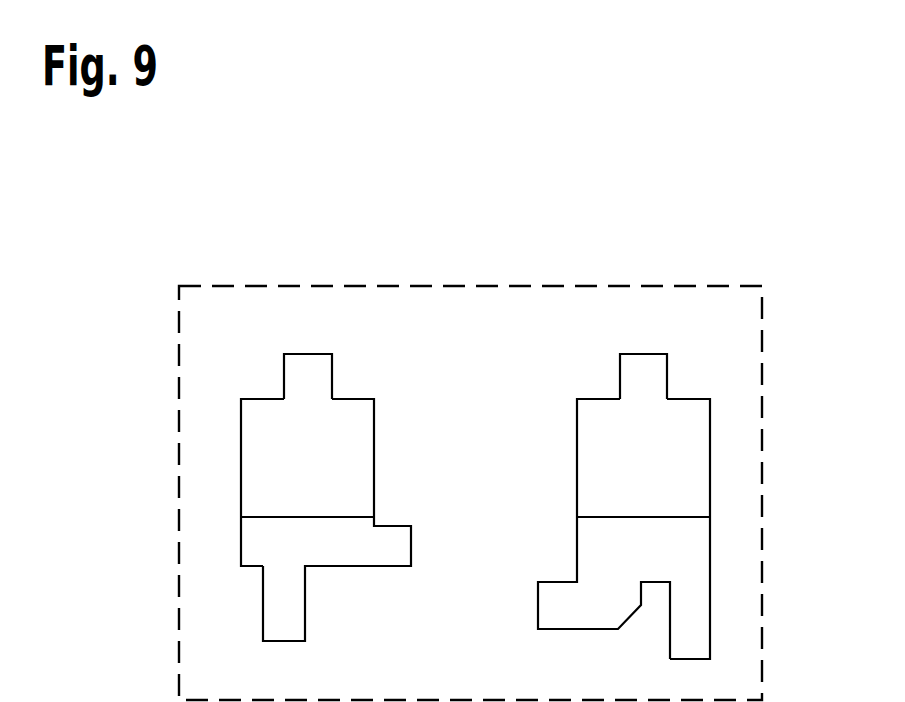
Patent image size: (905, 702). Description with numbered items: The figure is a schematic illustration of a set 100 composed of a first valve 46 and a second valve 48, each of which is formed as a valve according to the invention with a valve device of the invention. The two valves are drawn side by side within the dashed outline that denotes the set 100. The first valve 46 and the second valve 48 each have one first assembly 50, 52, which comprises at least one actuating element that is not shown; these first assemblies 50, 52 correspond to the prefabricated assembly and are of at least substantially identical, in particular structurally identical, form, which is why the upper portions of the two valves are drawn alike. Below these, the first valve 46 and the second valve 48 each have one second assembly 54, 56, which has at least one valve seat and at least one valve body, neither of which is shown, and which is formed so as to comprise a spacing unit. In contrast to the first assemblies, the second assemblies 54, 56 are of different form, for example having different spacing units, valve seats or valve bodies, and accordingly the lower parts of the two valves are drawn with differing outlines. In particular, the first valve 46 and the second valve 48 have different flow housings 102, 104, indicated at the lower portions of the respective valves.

The set 100 is at (473, 285).
The first valve 46 is at (341, 427).
The second valve 48 is at (688, 430).
The first assembly 50 is at (258, 378).
The first assembly 52 is at (593, 378).
The second assembly 54 is at (323, 556).
The second assembly 56 is at (605, 598).
The flow housing 102 is at (259, 546).
The flow housing 104 is at (683, 547).